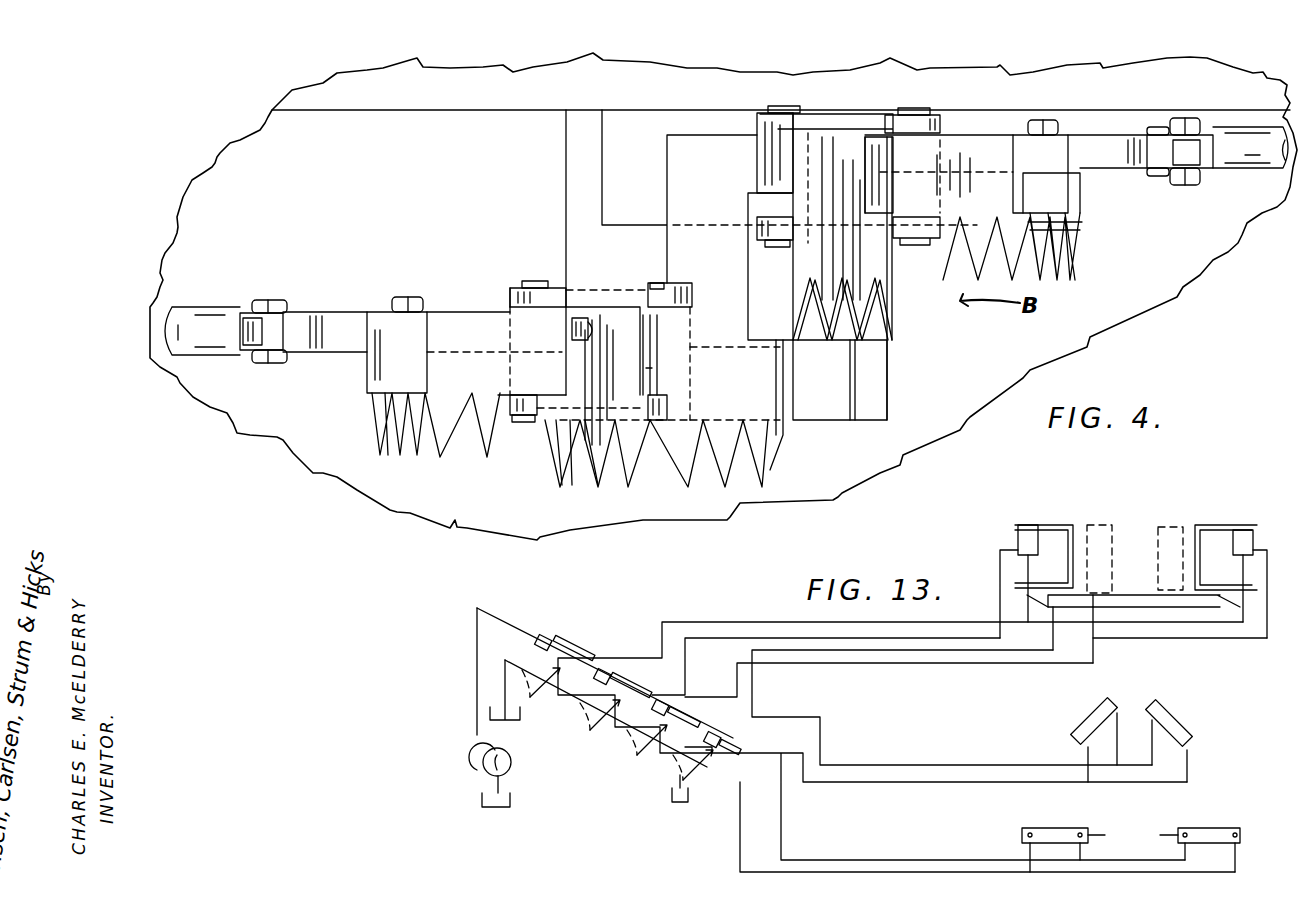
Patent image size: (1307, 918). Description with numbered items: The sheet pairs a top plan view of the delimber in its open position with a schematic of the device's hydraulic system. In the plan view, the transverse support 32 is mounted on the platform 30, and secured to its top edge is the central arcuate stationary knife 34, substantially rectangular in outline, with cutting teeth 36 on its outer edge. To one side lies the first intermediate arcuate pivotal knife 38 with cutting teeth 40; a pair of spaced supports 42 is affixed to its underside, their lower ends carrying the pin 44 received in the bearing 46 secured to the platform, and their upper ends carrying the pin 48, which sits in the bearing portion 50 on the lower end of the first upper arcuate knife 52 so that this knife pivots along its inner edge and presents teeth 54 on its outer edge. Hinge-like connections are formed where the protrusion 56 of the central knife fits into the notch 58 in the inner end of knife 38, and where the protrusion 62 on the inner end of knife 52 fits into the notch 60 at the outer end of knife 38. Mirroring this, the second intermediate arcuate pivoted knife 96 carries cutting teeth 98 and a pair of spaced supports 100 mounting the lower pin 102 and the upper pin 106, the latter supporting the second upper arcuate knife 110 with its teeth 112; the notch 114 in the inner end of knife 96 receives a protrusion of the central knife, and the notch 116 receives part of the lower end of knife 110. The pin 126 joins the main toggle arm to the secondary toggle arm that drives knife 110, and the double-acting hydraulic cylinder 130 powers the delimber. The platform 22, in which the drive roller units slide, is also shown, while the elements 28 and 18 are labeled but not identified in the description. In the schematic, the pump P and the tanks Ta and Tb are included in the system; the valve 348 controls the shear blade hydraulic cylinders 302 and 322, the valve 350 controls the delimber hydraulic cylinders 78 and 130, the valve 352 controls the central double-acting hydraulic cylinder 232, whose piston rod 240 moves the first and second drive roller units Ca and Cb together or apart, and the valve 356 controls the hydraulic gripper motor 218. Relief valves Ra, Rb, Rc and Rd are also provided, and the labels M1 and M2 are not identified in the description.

In FIG. 4, the platform 22 is at (1282, 212).
In FIG. 4, the housing top wall 28 is at (470, 110).
In FIG. 4, the platform 30 is at (565, 175).
In FIG. 4, the central arcuate stationary knife 34 is at (667, 157).
In FIG. 4, the cutting teeth 36 is at (775, 450).
In FIG. 4, the transverse support 32 is at (735, 358).
In FIG. 4, the notch 114 is at (767, 187).
In FIG. 4, the pin 102 is at (782, 113).
In FIG. 4, the pair of spaced supports 100 is at (830, 125).
In FIG. 4, the second intermediate arcuate pivoted knife 96 is at (875, 285).
In FIG. 4, the cutting teeth 98 is at (860, 330).
In FIG. 4, the notch 116 is at (893, 163).
In FIG. 4, the pin 106 is at (925, 113).
In FIG. 4, the teeth 112 is at (810, 157).
In FIG. 4, the second upper arcuate knife 110 is at (1115, 178).
In FIG. 4, the double-acting hydraulic cylinder 130 is at (1243, 175).
In FIG. 13, the double-acting hydraulic cylinder 130 is at (1180, 718).
In FIG. 4, the input shaft 18 is at (210, 355).
In FIG. 4, the pin 126 is at (270, 300).
In FIG. 4, the first upper arcuate knife 52 is at (367, 371).
In FIG. 4, the teeth 54 is at (445, 460).
In FIG. 4, the pair of spaced supports 42 is at (580, 290).
In FIG. 4, the pin 48 is at (543, 281).
In FIG. 4, the bearing portion 50 is at (512, 298).
In FIG. 4, the pin 44 is at (675, 283).
In FIG. 4, the notch 60 is at (572, 329).
In FIG. 4, the protrusion 62 is at (572, 376).
In FIG. 4, the protrusion 56 is at (645, 330).
In FIG. 4, the notch 58 is at (646, 368).
In FIG. 4, the bearing 46 is at (655, 395).
In FIG. 4, the first intermediate arcuate pivotal knife 38 is at (560, 420).
In FIG. 4, the cutting teeth 40 is at (585, 470).
In FIG. 13, the pump P is at (470, 755).
In FIG. 13, the tank Ta is at (490, 707).
In FIG. 13, the tank Tb is at (677, 802).
In FIG. 13, the relief valve Ra is at (542, 637).
In FIG. 13, the relief valve Rb is at (605, 670).
In FIG. 13, the relief valve Rc is at (663, 702).
In FIG. 13, the relief valve Rd is at (722, 740).
In FIG. 13, the valve 356 is at (540, 692).
In FIG. 13, the valve 352 is at (600, 725).
In FIG. 13, the valve 350 is at (645, 750).
In FIG. 13, the valve 348 is at (700, 778).
In FIG. 13, the solenoid M1 is at (1030, 538).
In FIG. 13, the solenoid M2 is at (1243, 538).
In FIG. 13, the hydraulic gripper motor 218 is at (1018, 542).
In FIG. 13, the first drive roller unit Ca is at (1115, 535).
In FIG. 13, the second drive roller unit Cb is at (1175, 525).
In FIG. 13, the central double-acting hydraulic cylinder 232 is at (1085, 595).
In FIG. 13, the piston rod 240 is at (1150, 598).
In FIG. 13, the delimber hydraulic cylinder 78 is at (1080, 722).
In FIG. 13, the shear blade hydraulic cylinder 302 is at (1045, 833).
In FIG. 13, the shear blade hydraulic cylinder 322 is at (1212, 833).